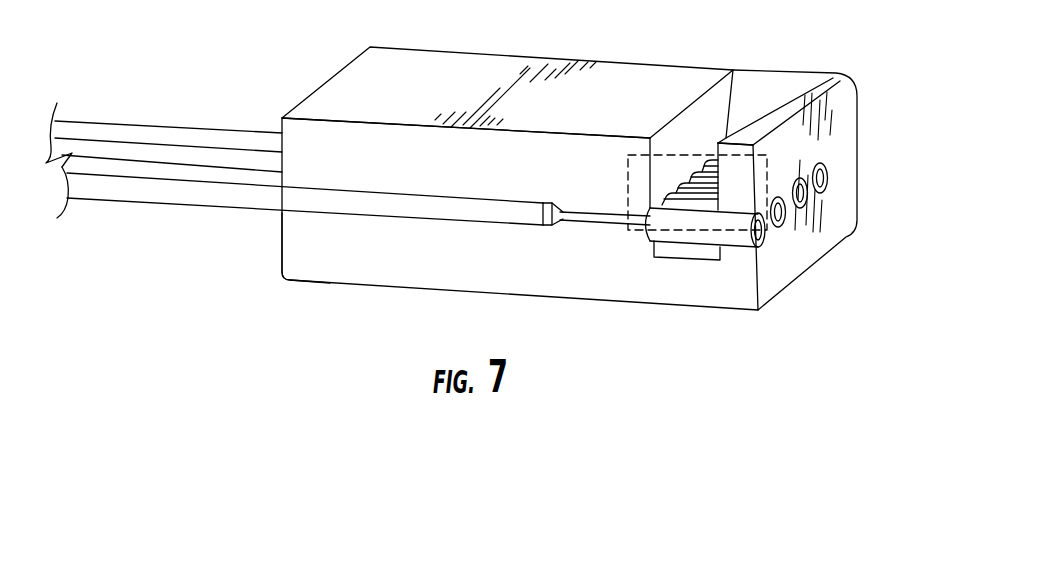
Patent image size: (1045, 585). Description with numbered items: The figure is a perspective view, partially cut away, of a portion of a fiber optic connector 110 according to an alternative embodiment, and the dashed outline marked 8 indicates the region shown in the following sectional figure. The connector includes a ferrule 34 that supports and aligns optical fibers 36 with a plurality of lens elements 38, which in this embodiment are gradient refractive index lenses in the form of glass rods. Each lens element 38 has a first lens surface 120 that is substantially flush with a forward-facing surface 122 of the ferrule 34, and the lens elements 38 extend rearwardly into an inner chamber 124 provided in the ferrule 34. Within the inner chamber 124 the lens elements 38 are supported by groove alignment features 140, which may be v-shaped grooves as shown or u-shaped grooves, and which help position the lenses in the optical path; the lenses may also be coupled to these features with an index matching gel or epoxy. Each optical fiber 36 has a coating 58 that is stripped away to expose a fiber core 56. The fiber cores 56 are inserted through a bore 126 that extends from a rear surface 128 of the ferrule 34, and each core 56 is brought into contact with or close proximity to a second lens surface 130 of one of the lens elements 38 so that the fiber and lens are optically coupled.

The fiber optic connector 110 is at (243, 60).
The ferrule 34 is at (505, 55).
The optical fibers 36 is at (147, 125).
The coating 58 is at (100, 202).
The bore 126 is at (552, 229).
The fiber cores 56 is at (575, 206).
The second lens surface 130 is at (648, 211).
The lens elements 38 is at (741, 270).
The groove alignment features 140 is at (700, 193).
The inner chamber 124 is at (760, 83).
The forward-facing surface 122 is at (848, 133).
The first lens surface 120 is at (764, 234).
The rear surface 128 is at (284, 254).
The section line for FIG. 8 is at (630, 232).